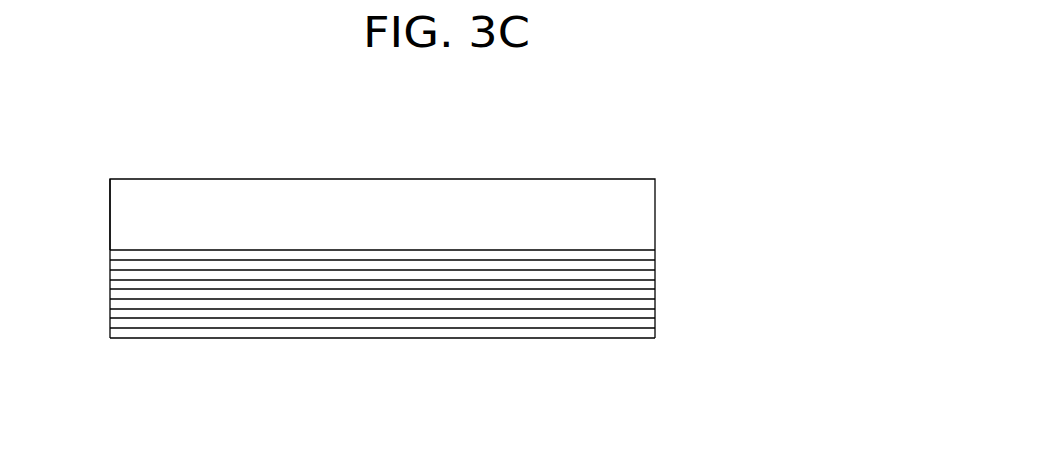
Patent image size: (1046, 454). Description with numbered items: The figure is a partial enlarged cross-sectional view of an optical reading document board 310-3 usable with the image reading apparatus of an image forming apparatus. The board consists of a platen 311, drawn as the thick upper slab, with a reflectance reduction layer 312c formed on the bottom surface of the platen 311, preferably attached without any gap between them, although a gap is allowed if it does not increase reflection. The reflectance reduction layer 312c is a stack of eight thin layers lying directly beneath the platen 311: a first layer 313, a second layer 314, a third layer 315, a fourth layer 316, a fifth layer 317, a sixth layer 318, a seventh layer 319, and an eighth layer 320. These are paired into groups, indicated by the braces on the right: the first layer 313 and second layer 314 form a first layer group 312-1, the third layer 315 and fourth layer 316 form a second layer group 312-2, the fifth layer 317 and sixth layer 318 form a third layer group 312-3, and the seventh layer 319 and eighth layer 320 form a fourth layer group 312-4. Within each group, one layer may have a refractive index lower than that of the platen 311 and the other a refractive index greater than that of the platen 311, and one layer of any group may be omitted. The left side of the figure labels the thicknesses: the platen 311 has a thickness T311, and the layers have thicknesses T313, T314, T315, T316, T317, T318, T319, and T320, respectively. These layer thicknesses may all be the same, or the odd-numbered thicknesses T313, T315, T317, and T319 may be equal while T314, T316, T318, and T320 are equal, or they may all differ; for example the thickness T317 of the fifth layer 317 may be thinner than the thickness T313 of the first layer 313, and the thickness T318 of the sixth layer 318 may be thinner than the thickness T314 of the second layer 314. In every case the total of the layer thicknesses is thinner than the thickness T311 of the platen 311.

The optical reading document board 310-3 is at (453, 254).
The platen 311 is at (658, 202).
The reflectance reduction layer 312c is at (494, 294).
The first layer group 312-1 is at (458, 247).
The second layer group 312-2 is at (458, 293).
The third layer group 312-3 is at (458, 325).
The fourth layer group 312-4 is at (458, 362).
The first layer 313 is at (658, 250).
The second layer 314 is at (658, 262).
The third layer 315 is at (658, 276).
The fourth layer 316 is at (658, 289).
The fifth layer 317 is at (658, 299).
The sixth layer 318 is at (658, 309).
The seventh layer 319 is at (645, 325).
The eighth layer 320 is at (633, 338).
The thickness of the platen T311 is at (112, 202).
The thickness of the first layer T313 is at (112, 253).
The thickness of the second layer T314 is at (112, 265).
The thickness of the third layer T315 is at (112, 275).
The thickness of the fourth layer T316 is at (113, 288).
The thickness of the fifth layer T317 is at (113, 300).
The thickness of the sixth layer T318 is at (113, 311).
The thickness of the seventh layer T319 is at (121, 322).
The thickness of the eighth layer T320 is at (128, 333).